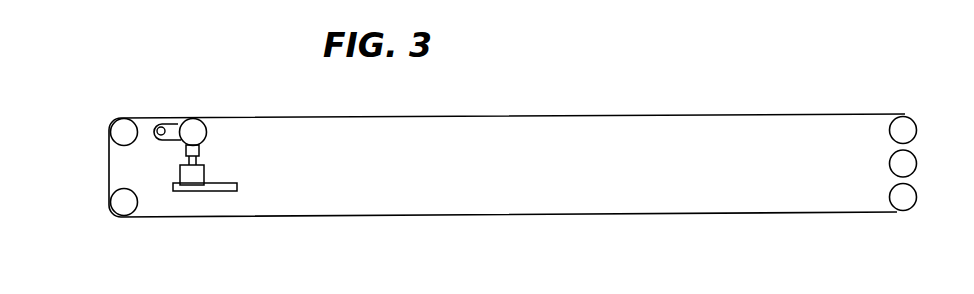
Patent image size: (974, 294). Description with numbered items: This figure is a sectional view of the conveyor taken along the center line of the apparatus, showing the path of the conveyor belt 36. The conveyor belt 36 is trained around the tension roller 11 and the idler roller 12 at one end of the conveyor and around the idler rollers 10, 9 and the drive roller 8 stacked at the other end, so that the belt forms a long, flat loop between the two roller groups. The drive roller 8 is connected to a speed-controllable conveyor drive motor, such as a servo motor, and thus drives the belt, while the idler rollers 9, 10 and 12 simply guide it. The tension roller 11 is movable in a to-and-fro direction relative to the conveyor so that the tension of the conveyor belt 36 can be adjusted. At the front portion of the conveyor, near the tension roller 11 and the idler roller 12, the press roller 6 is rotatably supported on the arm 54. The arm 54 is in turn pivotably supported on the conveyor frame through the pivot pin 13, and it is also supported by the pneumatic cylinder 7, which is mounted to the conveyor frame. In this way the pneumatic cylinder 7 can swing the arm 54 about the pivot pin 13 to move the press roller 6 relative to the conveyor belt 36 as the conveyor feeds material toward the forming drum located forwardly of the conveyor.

The conveyor belt 36 is at (768, 114).
The tension roller 11 is at (123, 130).
The idler roller 12 is at (122, 205).
The press roller 6 is at (197, 130).
The arm 54 is at (173, 128).
The pivot pin 13 is at (160, 128).
The pneumatic cylinder 7 is at (193, 178).
The drive roller 8 is at (907, 131).
The idler roller 9 is at (915, 161).
The idler roller 10 is at (909, 202).